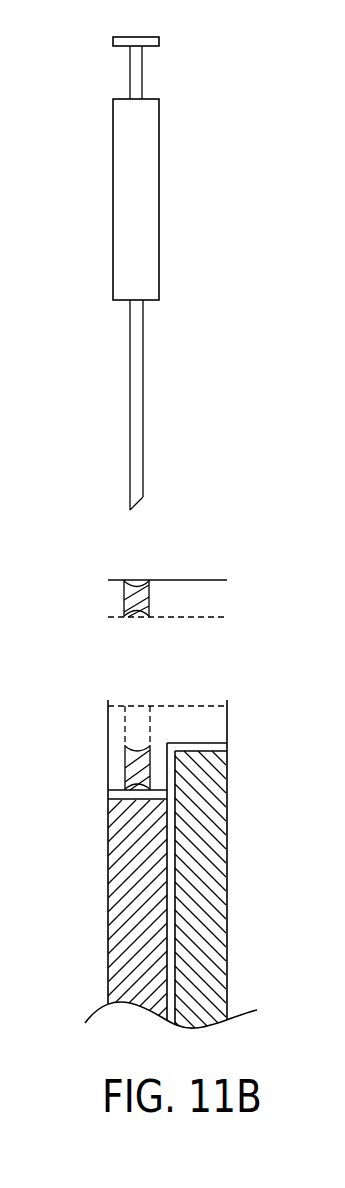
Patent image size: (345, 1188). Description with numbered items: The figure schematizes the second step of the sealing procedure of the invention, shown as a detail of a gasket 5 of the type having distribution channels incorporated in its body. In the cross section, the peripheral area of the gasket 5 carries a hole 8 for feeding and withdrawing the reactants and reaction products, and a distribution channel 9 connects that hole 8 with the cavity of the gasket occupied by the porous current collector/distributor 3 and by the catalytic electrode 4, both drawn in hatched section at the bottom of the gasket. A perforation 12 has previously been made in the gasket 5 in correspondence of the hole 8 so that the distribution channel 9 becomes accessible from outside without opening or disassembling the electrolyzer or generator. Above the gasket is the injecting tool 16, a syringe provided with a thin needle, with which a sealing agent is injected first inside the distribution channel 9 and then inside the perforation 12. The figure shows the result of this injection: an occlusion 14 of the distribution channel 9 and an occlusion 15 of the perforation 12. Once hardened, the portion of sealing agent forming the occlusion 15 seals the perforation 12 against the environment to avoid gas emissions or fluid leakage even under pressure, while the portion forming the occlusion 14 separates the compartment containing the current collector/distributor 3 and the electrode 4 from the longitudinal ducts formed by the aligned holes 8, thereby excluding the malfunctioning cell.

The injecting tool 16 is at (143, 279).
The gasket 5 is at (212, 600).
The holes 8 is at (217, 653).
The perforations 12 is at (96, 574).
The occlusion of the perforation 15 is at (125, 597).
The distribution channels 9 is at (137, 722).
The occlusion of the distribution channel 14 is at (128, 750).
The current collector/distributor 3 is at (138, 875).
The catalytic electrode 4 is at (218, 860).